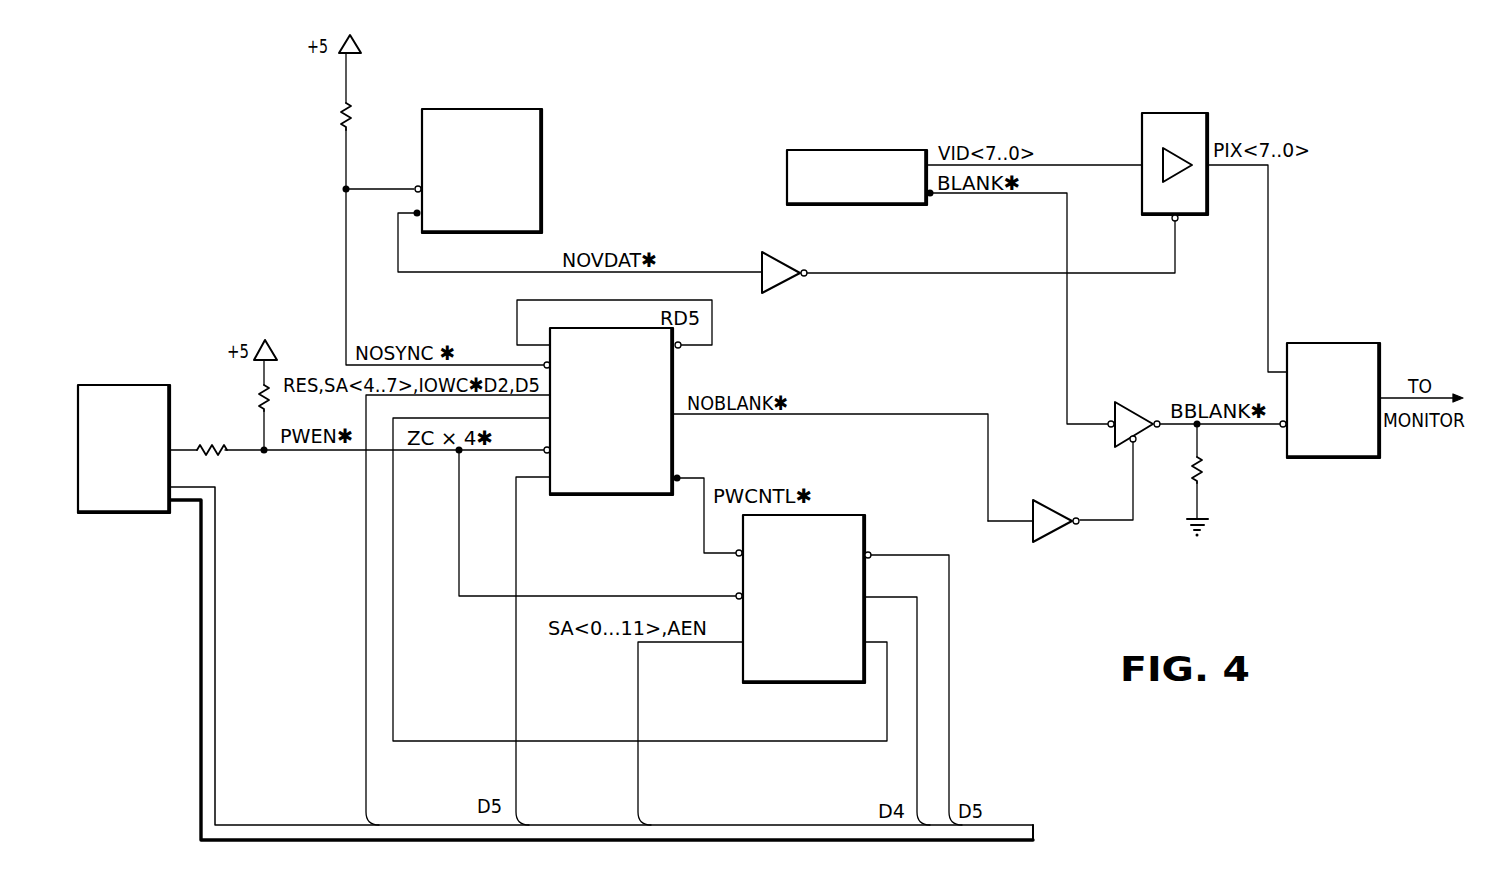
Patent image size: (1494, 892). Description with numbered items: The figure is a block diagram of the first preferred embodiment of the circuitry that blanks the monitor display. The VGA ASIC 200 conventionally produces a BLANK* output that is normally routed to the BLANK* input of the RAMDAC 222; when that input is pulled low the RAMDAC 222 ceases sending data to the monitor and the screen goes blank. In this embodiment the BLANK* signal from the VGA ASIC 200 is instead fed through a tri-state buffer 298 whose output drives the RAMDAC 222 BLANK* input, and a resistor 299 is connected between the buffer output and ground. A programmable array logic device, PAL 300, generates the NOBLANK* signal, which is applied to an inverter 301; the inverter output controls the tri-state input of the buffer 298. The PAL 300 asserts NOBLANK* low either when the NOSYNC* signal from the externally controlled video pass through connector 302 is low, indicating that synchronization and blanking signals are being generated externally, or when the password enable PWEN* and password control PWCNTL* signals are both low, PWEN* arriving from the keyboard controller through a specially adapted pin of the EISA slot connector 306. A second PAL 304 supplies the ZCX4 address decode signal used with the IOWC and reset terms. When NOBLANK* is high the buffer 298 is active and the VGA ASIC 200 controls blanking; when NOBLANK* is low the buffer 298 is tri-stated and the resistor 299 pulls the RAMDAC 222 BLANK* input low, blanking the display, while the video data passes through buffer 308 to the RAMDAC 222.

The VGA ASIC 200 is at (852, 150).
The RAMDAC 222 is at (1320, 343).
The tri-state buffer 298 is at (1134, 402).
The resistor 299 is at (1203, 472).
The programmable array logic (PAL) device 300 is at (580, 496).
The inverter 301 is at (1055, 500).
The video pass through connector 302 is at (481, 108).
The PAL 304 is at (778, 683).
The EISA I/O connector 306 is at (118, 385).
The buffer 308 is at (1172, 110).